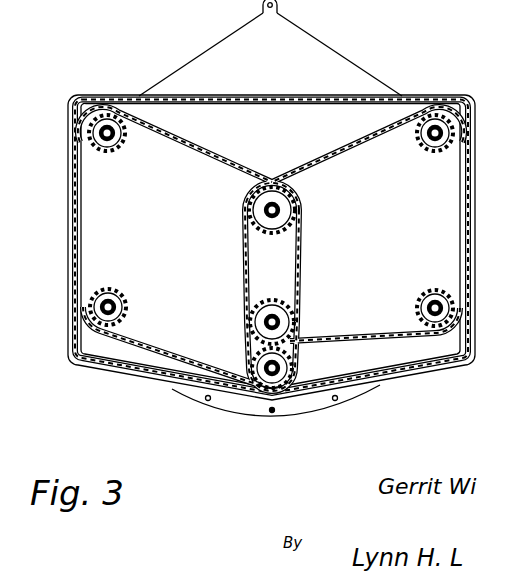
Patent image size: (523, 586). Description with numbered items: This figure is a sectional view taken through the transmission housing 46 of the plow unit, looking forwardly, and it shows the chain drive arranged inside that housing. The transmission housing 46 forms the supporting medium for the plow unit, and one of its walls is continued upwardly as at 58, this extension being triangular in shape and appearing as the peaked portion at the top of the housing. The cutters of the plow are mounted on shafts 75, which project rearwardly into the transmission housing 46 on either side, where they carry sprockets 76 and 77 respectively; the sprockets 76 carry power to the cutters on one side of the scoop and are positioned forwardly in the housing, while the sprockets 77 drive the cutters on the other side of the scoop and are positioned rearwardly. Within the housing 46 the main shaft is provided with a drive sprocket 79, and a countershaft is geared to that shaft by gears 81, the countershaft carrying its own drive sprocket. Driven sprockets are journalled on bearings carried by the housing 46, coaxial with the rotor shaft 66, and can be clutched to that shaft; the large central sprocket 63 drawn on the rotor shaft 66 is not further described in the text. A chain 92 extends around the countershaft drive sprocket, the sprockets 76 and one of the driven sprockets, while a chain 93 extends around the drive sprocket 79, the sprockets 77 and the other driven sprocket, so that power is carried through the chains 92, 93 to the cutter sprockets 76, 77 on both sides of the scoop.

The upward continuation of housing wall 58 is at (270, 48).
The transmission housing 46 is at (272, 104).
The chain 93 is at (84, 234).
The chain 92 is at (336, 158).
The shafts 75 is at (107, 133).
The sprockets 77 is at (120, 143).
The sprockets 76 is at (432, 158).
The drive sprocket 63 is at (292, 218).
The rotor shaft 66 is at (266, 210).
The gears 81 is at (288, 314).
The drive sprocket 79 is at (293, 368).